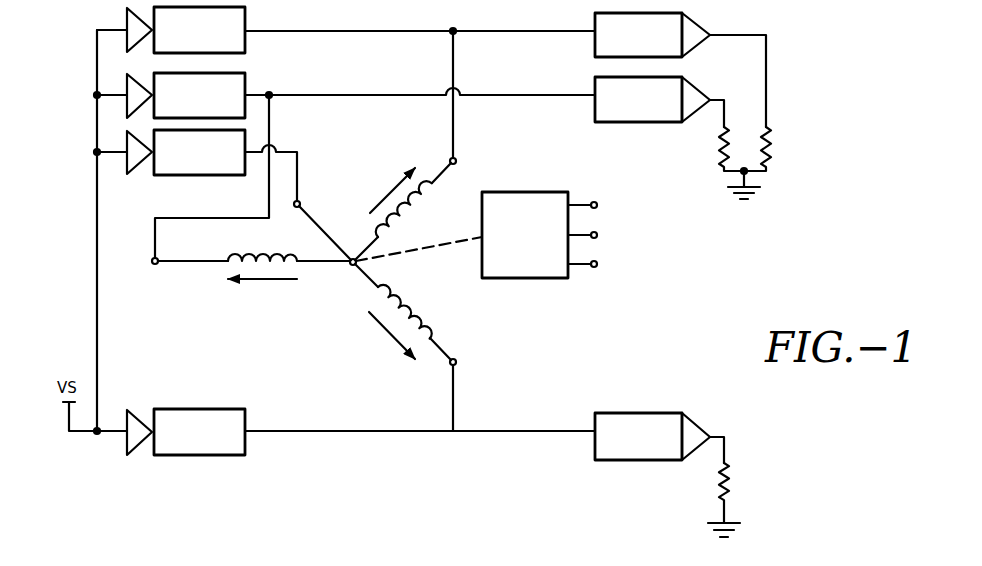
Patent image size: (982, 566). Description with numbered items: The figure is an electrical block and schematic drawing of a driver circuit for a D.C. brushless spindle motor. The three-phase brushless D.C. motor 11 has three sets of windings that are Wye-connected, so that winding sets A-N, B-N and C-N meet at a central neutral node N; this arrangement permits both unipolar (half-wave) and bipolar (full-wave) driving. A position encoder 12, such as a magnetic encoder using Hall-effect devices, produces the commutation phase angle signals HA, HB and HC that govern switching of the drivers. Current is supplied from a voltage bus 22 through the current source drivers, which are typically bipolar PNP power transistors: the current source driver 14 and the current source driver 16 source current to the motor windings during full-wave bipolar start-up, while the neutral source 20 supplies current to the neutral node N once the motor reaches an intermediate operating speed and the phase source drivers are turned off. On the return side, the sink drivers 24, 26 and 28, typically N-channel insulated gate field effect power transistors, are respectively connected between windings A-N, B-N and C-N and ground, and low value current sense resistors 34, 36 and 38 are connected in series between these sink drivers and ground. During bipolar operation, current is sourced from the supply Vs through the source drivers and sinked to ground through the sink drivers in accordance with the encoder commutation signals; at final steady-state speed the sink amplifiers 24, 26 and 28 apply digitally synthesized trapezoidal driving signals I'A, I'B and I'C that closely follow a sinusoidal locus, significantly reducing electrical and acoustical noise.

The brushless D.C. motor 11 is at (337, 286).
The position encoder 12 is at (516, 271).
The current source driver 14 is at (361, 264).
The current source driver 16 is at (361, 30).
The neutral source 20 is at (212, 165).
The voltage bus 22 is at (97, 290).
The sink driver 24 is at (659, 102).
The sink driver 26 is at (680, 70).
The sink driver 28 is at (659, 438).
The current sense resistor 34 is at (721, 138).
The current sense resistor 36 is at (773, 140).
The current sense resistor 38 is at (728, 482).